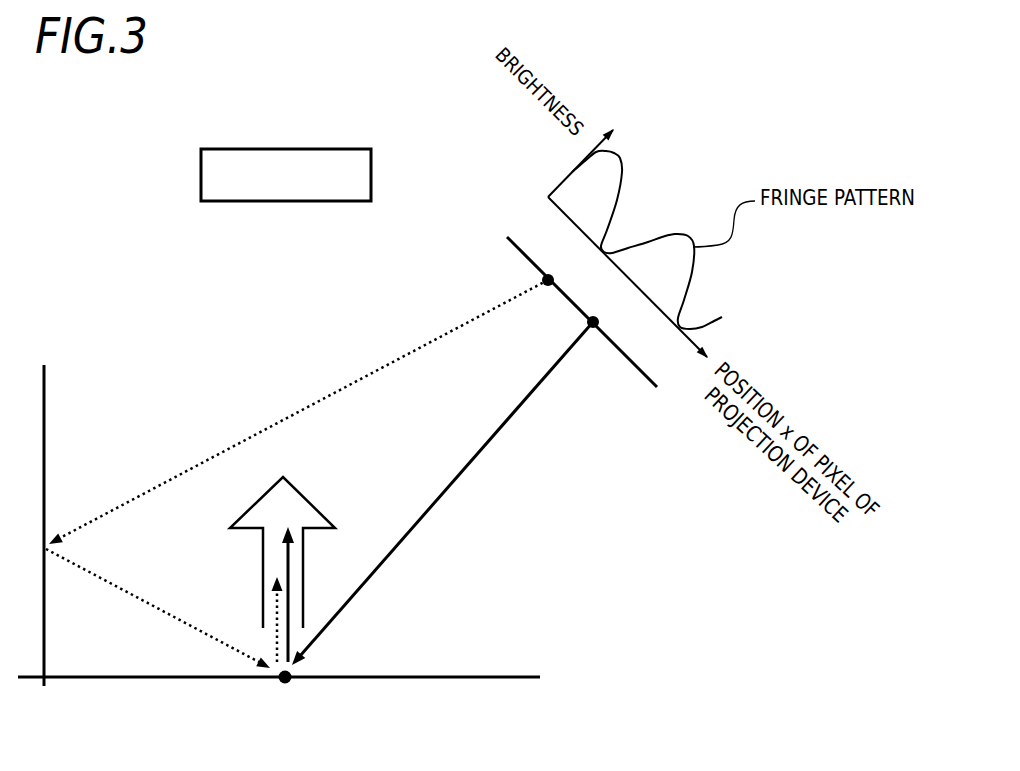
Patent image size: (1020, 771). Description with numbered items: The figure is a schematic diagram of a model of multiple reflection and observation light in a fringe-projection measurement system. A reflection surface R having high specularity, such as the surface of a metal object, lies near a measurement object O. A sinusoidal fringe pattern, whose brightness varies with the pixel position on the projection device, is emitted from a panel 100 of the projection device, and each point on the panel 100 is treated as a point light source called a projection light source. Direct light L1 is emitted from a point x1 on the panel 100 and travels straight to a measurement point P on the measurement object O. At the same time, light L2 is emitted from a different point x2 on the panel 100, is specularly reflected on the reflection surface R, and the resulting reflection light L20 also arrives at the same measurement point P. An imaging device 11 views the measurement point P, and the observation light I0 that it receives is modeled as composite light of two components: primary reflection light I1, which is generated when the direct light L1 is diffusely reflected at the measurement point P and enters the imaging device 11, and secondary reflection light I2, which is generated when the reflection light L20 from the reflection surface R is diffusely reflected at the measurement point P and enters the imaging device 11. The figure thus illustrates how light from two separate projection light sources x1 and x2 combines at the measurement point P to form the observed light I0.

The imaging device 11 is at (200, 173).
The panel 100 is at (509, 237).
The point x1 on the panel x1 is at (610, 317).
The point x2 on the panel x2 is at (563, 270).
The reflection surface R is at (48, 381).
The measurement object O is at (411, 676).
The measurement point P is at (282, 686).
The direct light L1 is at (498, 430).
The light L2 is at (375, 371).
The reflection light L20 is at (125, 586).
The observation light I0 is at (300, 491).
The primary reflection light I1 is at (290, 572).
The secondary reflection light I2 is at (276, 606).